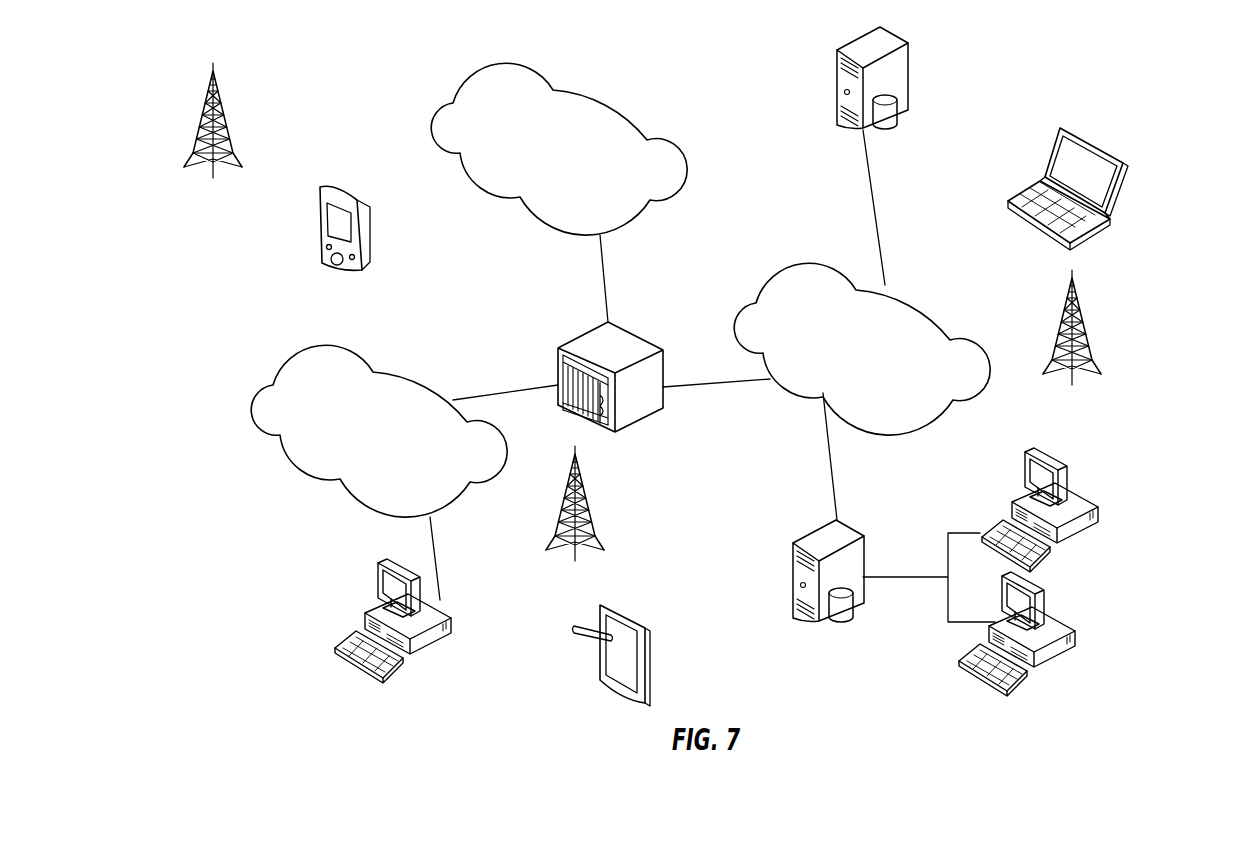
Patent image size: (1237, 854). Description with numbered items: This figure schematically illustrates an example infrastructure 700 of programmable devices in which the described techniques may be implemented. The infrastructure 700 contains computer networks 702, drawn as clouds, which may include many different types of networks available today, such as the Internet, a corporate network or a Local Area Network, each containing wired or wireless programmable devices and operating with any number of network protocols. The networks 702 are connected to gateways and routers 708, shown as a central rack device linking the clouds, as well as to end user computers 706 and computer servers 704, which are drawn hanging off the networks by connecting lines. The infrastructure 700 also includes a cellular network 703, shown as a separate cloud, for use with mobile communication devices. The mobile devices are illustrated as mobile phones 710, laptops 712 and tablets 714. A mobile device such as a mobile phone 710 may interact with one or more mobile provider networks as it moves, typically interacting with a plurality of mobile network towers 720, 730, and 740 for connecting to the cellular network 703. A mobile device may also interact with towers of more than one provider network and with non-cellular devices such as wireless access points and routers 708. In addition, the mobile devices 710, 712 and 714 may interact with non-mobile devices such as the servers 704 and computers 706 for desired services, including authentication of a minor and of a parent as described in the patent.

The infrastructure 700 is at (983, 108).
The computer networks 702 is at (362, 360).
The cellular network 703 is at (597, 93).
The computer servers 704 is at (838, 70).
The end user computers 706 is at (1065, 473).
The gateways and routers 708 is at (628, 333).
The mobile phones 710 is at (350, 190).
The laptops 712 is at (1093, 143).
The tablets 714 is at (633, 613).
The mobile network tower 720 is at (575, 515).
The mobile network tower 730 is at (1072, 339).
The mobile network tower 740 is at (213, 132).